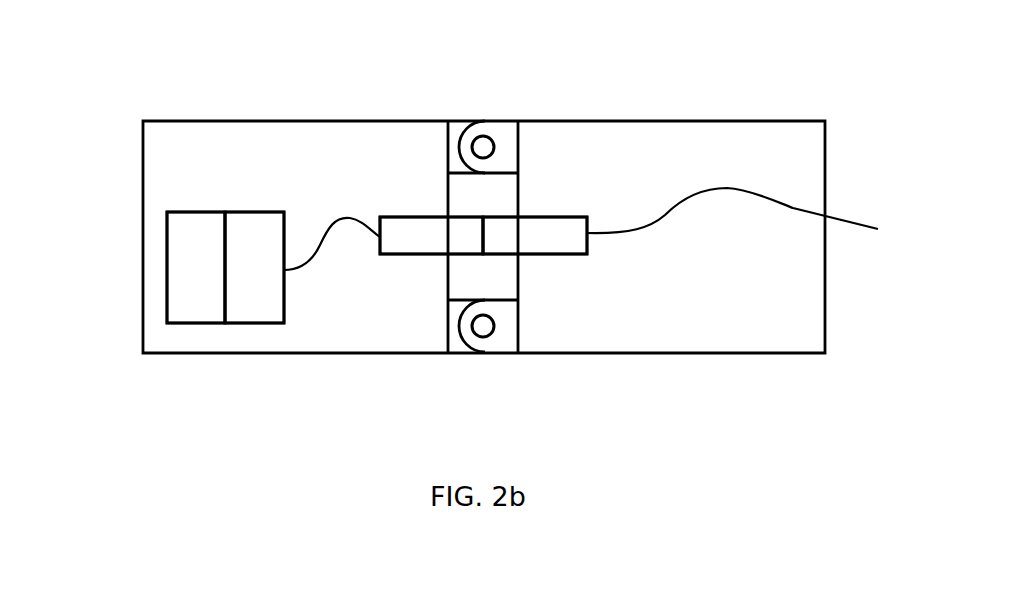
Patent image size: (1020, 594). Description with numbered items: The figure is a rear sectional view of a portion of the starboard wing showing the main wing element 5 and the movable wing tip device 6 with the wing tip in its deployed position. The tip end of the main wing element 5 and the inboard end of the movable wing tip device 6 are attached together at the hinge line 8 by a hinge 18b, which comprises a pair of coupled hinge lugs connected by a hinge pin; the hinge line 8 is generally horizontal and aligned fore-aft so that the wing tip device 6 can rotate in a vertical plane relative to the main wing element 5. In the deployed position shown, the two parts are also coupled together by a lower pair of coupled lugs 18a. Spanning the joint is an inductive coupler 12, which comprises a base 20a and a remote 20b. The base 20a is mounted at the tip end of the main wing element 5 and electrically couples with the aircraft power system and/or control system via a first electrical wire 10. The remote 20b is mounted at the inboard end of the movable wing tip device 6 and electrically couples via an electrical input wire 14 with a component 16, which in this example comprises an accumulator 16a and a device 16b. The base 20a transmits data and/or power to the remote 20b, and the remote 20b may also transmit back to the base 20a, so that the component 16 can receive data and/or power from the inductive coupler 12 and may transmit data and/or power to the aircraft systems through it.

The main wing element 5 is at (690, 121).
The movable wing tip device 6 is at (240, 120).
The hinge line 8 is at (458, 88).
The first electrical wire 10 is at (853, 217).
The inductive coupler 12 is at (489, 264).
The electrical input wire 14 is at (347, 215).
The component 16 is at (222, 337).
The accumulator 16a is at (245, 210).
The device 16b is at (165, 297).
The lower pair of coupled lugs 18a is at (483, 348).
The hinge 18b is at (500, 117).
The base 20a is at (572, 255).
The remote 20b is at (402, 257).